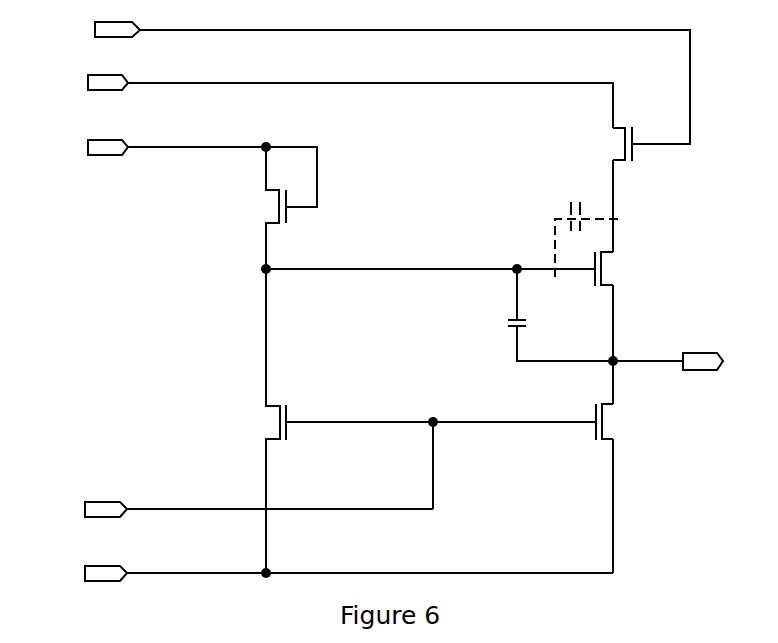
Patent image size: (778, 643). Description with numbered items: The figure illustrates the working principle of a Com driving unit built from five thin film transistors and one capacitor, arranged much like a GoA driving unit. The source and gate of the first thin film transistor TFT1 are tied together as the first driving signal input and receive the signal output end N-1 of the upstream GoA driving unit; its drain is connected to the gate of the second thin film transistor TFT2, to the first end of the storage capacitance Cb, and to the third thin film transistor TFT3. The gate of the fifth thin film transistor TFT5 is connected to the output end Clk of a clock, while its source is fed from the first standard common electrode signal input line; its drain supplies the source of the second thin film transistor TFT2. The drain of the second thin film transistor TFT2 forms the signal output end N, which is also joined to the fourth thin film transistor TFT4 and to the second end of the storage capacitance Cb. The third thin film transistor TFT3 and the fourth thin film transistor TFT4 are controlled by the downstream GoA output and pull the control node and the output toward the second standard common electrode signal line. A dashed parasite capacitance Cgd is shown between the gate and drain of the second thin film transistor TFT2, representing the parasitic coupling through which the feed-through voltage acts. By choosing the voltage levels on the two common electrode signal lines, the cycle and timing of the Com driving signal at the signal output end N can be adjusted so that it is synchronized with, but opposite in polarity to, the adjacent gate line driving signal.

The output end of a clock Clk is at (375, 83).
The signal output end of an upstream GoA driving unit N-1 is at (159, 148).
The signal output end N is at (678, 362).
The first thin film transistor TFT1 is at (249, 208).
The second thin film transistor TFT2 is at (629, 269).
The third thin film transistor TFT3 is at (253, 421).
The fourth thin film transistor TFT4 is at (627, 422).
The fifth thin film transistor TFT5 is at (597, 144).
The parasite capacitance Cgd is at (585, 228).
The storage capacitance Cb is at (560, 315).